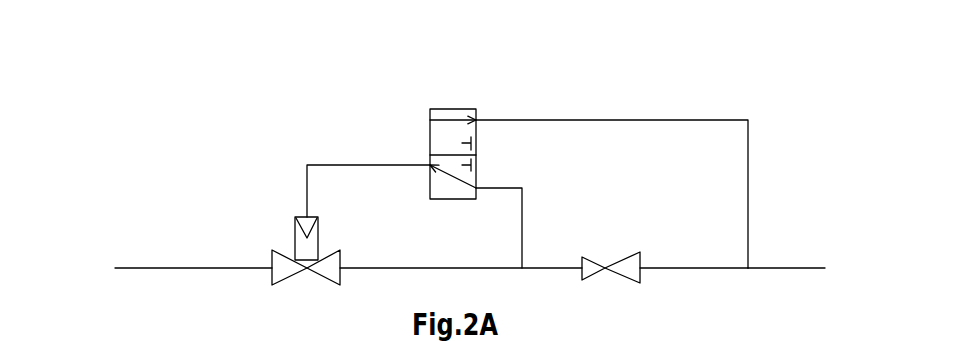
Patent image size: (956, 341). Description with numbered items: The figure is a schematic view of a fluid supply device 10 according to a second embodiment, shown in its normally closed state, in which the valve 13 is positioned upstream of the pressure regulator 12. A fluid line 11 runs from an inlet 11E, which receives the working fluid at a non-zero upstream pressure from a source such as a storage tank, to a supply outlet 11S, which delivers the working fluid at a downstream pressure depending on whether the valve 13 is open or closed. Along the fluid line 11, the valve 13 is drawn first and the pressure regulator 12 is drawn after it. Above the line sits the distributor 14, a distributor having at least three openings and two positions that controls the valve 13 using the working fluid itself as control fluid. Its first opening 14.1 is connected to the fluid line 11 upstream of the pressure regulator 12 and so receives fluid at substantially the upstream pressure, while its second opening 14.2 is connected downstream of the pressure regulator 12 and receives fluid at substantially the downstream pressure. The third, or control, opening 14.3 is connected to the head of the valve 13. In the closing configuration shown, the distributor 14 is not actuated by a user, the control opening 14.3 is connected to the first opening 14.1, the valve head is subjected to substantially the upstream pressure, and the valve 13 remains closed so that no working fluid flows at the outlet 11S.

The fluid supply device 10 is at (102, 120).
The fluid line 11 is at (546, 272).
The inlet 11E is at (120, 272).
The supply outlet 11S is at (826, 280).
The pressure regulator 12 is at (622, 287).
The valve 13 is at (298, 281).
The distributor 14 is at (448, 103).
The first opening 14.1 is at (499, 216).
The second opening 14.2 is at (612, 183).
The control opening 14.3 is at (368, 180).